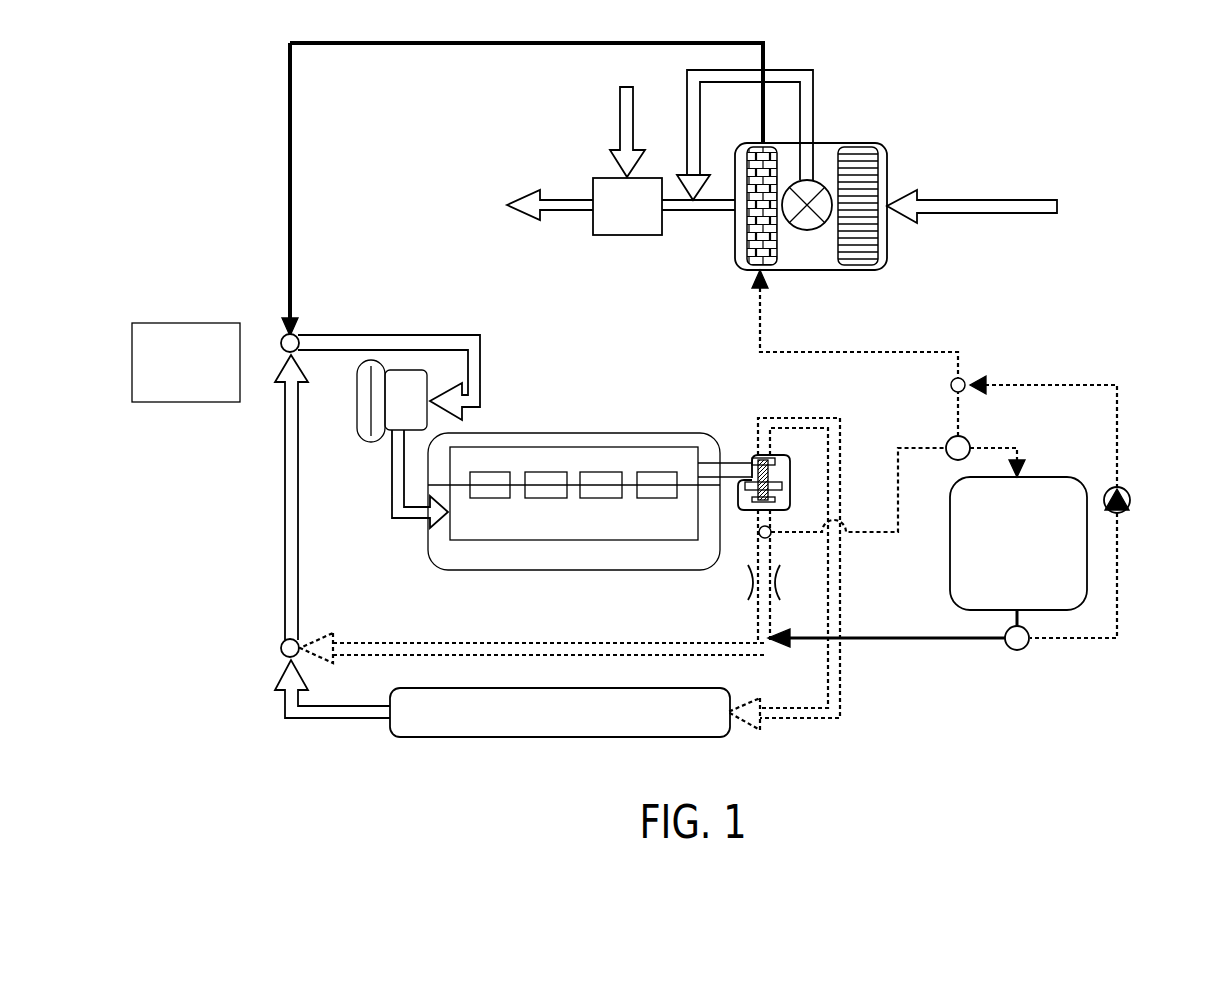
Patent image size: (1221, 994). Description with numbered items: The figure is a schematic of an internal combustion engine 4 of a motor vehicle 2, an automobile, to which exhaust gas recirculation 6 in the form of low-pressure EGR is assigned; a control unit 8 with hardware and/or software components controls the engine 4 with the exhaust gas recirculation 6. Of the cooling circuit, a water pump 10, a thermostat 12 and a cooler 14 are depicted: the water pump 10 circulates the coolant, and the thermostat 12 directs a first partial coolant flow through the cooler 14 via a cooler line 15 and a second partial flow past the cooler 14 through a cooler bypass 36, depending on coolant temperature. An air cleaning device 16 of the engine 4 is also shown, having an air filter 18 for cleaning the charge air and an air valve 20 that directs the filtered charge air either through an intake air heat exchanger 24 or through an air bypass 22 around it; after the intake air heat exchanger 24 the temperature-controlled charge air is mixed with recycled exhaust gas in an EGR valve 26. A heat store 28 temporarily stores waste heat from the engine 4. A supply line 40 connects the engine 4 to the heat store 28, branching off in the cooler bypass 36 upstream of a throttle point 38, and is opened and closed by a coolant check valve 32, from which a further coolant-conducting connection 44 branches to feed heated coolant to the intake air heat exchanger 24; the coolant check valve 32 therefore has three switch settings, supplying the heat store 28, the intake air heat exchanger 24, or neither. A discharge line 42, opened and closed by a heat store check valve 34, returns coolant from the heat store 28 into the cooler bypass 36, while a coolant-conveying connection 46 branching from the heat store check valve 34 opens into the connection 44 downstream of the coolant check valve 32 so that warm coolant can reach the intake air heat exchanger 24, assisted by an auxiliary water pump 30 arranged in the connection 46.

The motor vehicle 2 is at (190, 92).
The internal combustion engine 4 is at (576, 433).
The exhaust gas recirculation 6 is at (601, 96).
The control unit 8 is at (178, 377).
The water pump 10 is at (358, 432).
The thermostat 12 is at (750, 515).
The cooler 14 is at (545, 725).
The cooler line 15 is at (778, 418).
The air cleaning device 16 is at (865, 272).
The air filter 18 is at (878, 228).
The air valve 20 is at (812, 185).
The air bypass 22 is at (782, 70).
The intake air heat exchanger 24 is at (747, 234).
The EGR valve 26 is at (613, 180).
The heat store 28 is at (950, 553).
The auxiliary water pump 30 is at (1130, 500).
The coolant check valve 32 is at (972, 448).
The heat store check valve 34 is at (1017, 650).
The cooler bypass 36 is at (566, 643).
The throttle point 38 is at (783, 583).
The supply line 40 is at (898, 448).
The discharge line 42 is at (920, 645).
The coolant-conducting connection 44 is at (757, 330).
The coolant-conveying connection 46 is at (1062, 385).